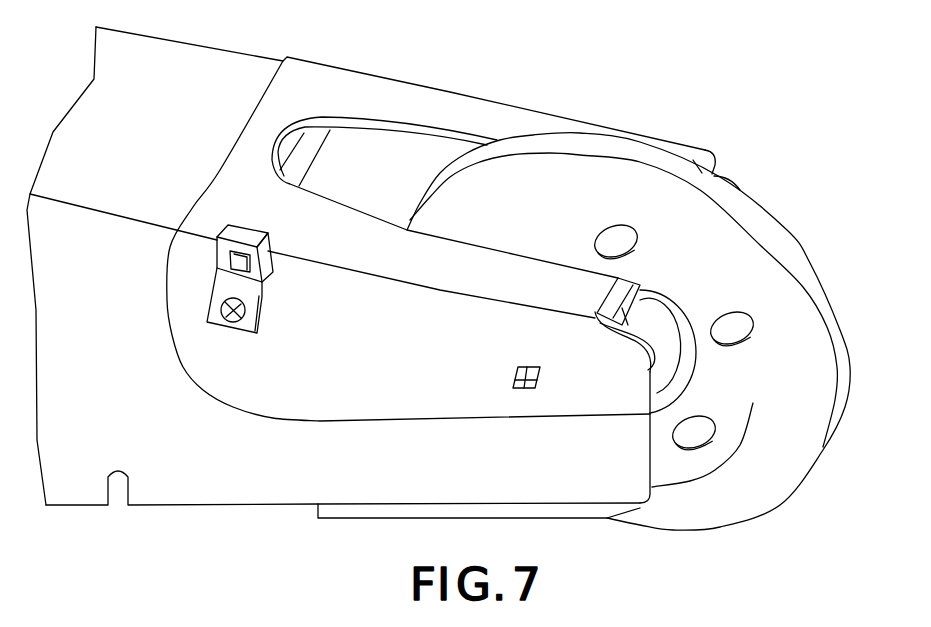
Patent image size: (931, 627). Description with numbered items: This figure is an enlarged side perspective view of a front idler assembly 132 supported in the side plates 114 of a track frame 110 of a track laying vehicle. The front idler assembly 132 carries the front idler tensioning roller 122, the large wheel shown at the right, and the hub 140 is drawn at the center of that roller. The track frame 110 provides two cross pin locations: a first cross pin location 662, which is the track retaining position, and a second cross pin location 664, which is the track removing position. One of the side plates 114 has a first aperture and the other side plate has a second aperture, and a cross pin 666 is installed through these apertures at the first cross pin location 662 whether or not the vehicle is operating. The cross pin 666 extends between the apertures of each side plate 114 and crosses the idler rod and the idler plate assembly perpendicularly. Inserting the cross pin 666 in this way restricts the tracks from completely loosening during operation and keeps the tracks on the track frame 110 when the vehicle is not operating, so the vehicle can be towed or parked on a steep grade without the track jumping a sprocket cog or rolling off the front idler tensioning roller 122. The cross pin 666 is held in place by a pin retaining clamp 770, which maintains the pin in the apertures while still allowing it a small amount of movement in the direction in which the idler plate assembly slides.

The track frame 110 is at (105, 520).
The side plates 114 is at (287, 478).
The front idler tensioning roller 122 is at (757, 220).
The front idler assembly 132 is at (750, 140).
The hub 140 is at (639, 287).
The first cross pin location 662 is at (205, 260).
The second cross pin location 664 is at (525, 398).
The cross pin 666 is at (320, 150).
The pin retaining clamp 770 is at (247, 322).